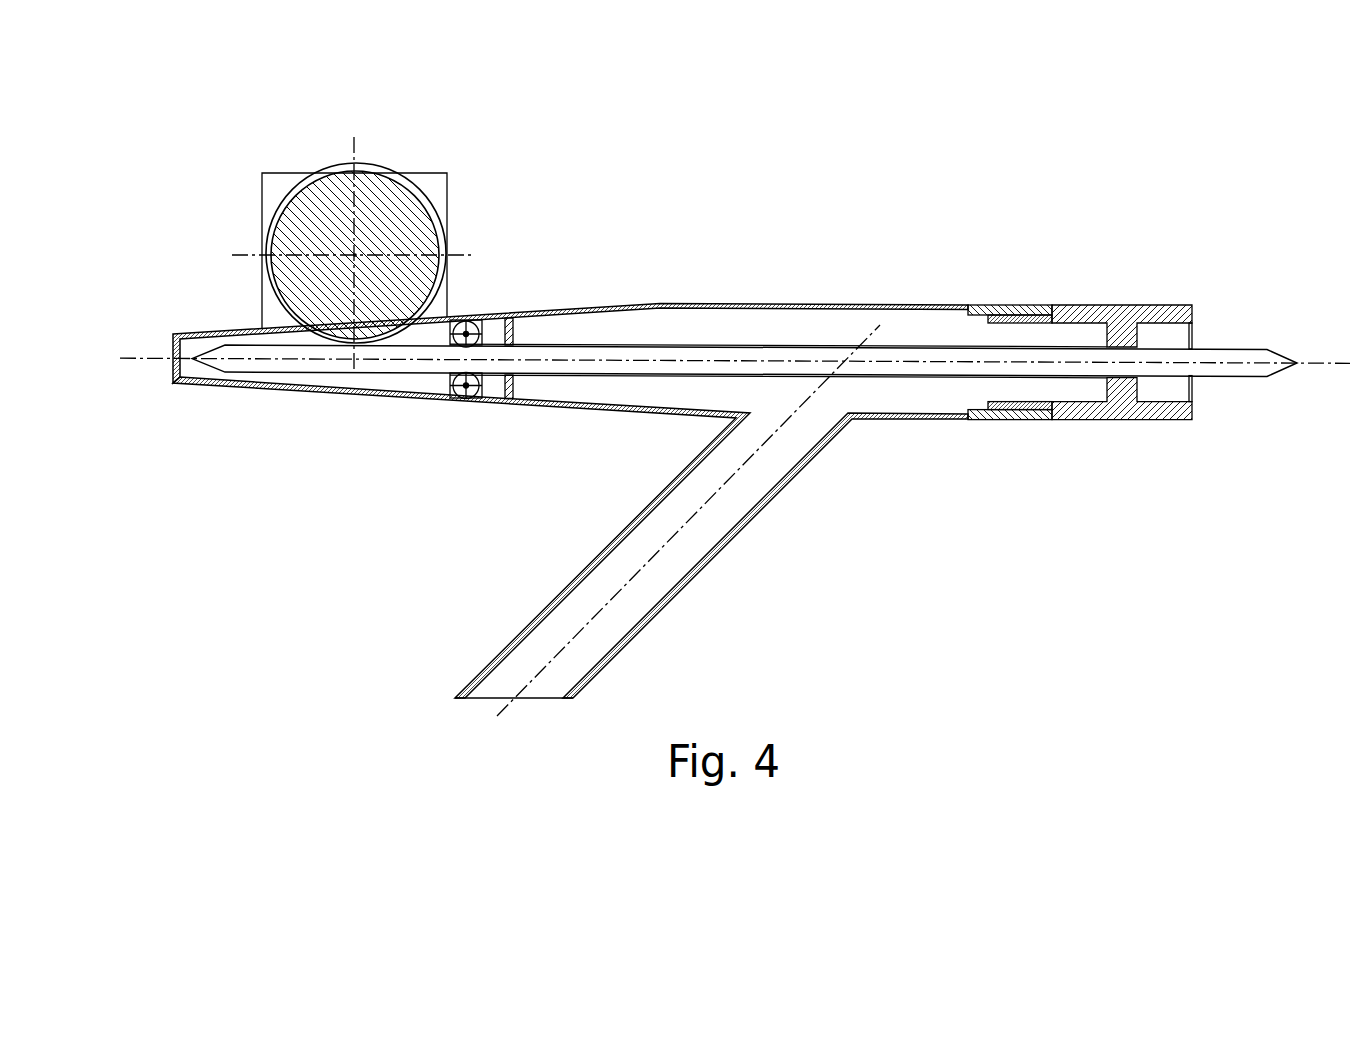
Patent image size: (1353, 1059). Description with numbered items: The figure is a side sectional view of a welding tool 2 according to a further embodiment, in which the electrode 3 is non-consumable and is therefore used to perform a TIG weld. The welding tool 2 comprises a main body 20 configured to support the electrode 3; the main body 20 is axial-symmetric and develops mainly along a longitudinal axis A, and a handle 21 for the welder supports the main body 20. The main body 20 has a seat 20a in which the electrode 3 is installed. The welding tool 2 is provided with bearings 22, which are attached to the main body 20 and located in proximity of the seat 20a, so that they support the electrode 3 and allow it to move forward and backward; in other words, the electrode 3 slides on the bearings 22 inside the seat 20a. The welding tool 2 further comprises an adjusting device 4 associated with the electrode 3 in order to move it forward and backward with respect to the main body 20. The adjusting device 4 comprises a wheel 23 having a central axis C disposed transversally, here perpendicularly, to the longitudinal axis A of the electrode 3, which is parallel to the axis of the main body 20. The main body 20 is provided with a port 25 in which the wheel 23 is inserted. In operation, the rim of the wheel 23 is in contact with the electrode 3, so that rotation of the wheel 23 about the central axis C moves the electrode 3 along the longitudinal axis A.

The welding tool 2 is at (300, 108).
The electrode 3 is at (1247, 343).
The adjusting device 4 is at (365, 163).
The main body 20 is at (905, 305).
The seat 20a is at (512, 376).
The handle 21 is at (741, 533).
The bearings 22 is at (468, 320).
The wheel 23 is at (405, 205).
The port 25 is at (292, 320).
The longitudinal axis A is at (1068, 362).
The central axis C is at (346, 256).